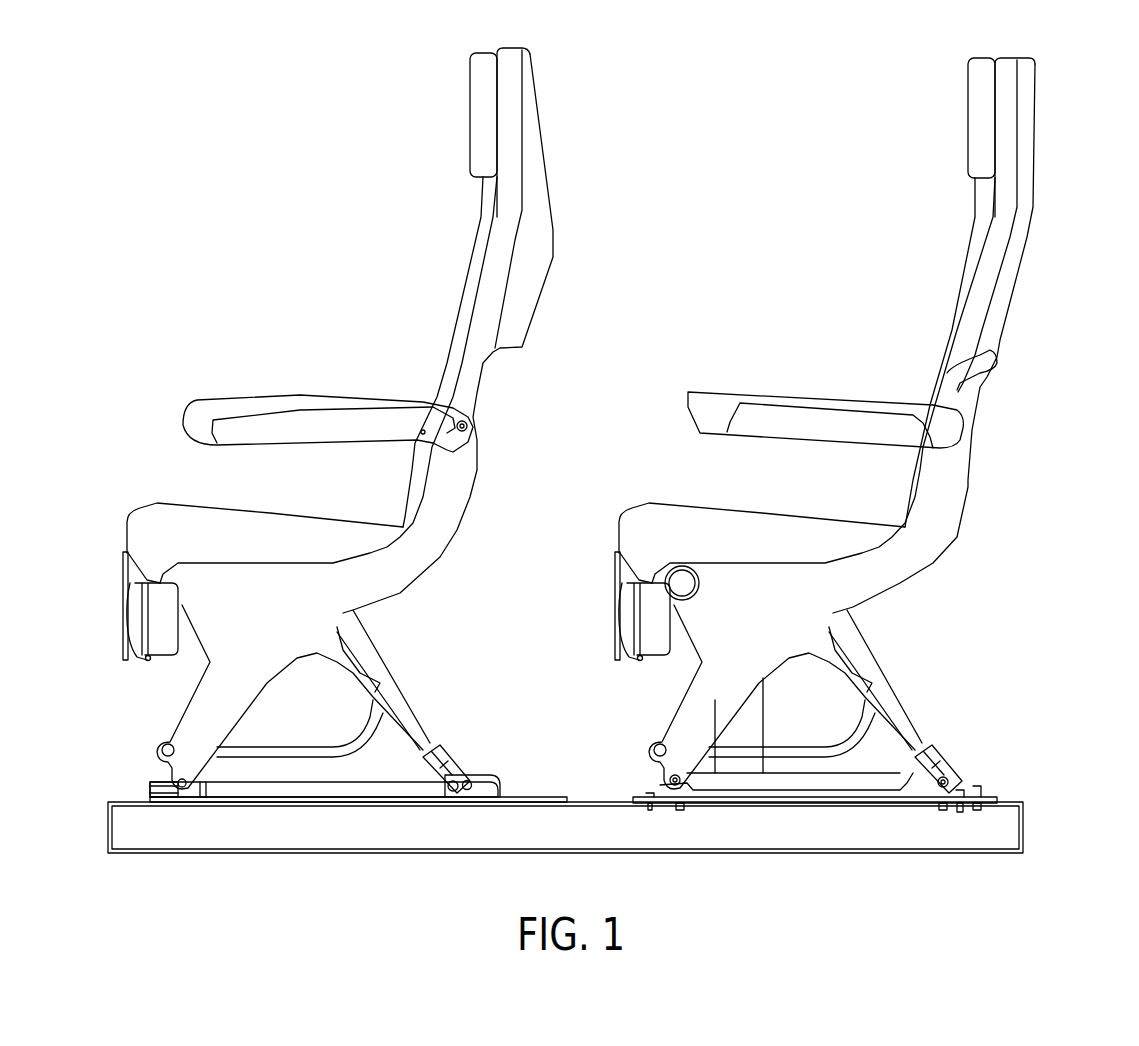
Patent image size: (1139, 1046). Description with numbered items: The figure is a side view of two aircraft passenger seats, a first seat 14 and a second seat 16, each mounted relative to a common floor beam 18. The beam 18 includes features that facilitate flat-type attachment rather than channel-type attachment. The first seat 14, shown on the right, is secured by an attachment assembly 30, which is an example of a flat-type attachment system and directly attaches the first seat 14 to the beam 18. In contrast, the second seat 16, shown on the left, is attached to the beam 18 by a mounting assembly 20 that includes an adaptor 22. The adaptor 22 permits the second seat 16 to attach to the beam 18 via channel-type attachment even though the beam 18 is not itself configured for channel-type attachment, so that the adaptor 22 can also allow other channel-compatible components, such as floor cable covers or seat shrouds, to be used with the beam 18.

The first seat 14 is at (1049, 126).
The second seat 16 is at (562, 124).
The beam 18 is at (700, 855).
The mounting assembly 20 is at (316, 780).
The adaptor 22 is at (540, 796).
The attachment assembly 30 is at (1029, 777).